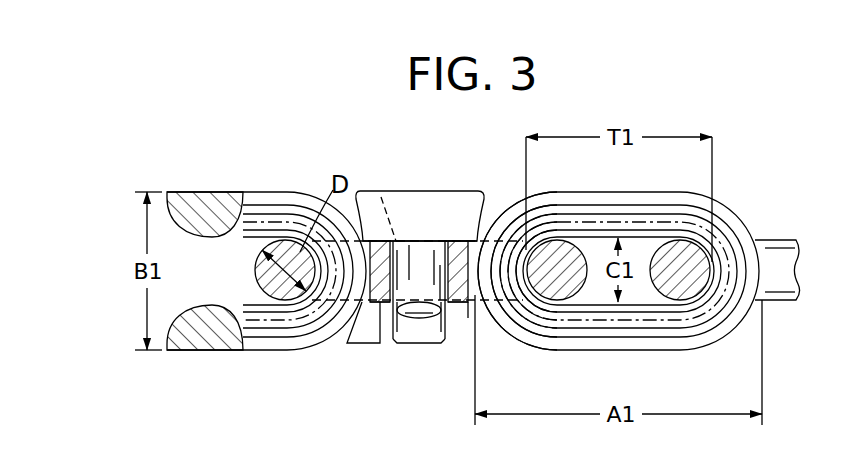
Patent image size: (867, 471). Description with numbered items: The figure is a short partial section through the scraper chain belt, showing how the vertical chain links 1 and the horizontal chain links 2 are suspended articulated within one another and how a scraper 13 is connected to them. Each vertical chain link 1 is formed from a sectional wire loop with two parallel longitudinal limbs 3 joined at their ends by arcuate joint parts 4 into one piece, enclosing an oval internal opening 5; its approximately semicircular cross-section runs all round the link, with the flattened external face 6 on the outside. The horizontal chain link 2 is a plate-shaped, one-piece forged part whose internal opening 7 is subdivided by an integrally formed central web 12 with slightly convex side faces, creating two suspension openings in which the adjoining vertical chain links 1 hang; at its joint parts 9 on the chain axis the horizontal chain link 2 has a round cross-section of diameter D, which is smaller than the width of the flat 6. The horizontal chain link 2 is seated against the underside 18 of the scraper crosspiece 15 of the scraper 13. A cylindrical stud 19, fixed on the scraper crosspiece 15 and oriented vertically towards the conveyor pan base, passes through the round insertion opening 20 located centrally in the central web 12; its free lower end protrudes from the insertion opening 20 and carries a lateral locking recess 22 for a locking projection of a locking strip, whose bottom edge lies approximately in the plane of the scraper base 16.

The vertical chain link 1 is at (263, 190).
The horizontal chain link 2 is at (459, 240).
The longitudinal limb 3 is at (212, 206).
The arcuate joint part 4 is at (507, 215).
The oval internal opening 5 is at (192, 279).
The flattened external face 6 is at (294, 196).
The internal opening 7 is at (471, 287).
The joint part 9 is at (257, 264).
The central web 12 is at (457, 292).
The scraper 13 is at (438, 193).
The scraper crosspiece 15 is at (418, 236).
The scraper base 16 is at (362, 344).
The underside of the scraper crosspiece 18 is at (409, 240).
The stud 19 is at (414, 332).
The insertion opening 20 is at (385, 265).
The locking recess 22 is at (411, 316).